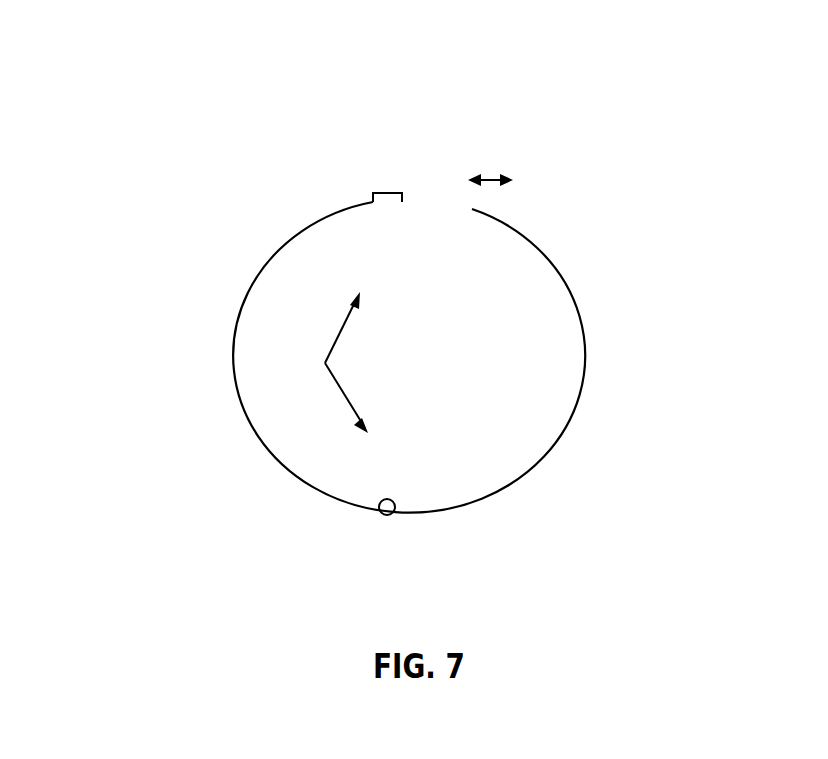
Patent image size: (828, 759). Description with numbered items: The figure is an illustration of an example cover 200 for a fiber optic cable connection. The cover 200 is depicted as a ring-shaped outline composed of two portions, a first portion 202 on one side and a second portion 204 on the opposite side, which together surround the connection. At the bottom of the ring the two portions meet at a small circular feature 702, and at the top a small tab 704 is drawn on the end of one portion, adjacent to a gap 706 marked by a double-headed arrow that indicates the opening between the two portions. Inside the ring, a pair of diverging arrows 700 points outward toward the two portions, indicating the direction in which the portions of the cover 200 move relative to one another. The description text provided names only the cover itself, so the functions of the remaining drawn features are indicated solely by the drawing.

The cover 200 is at (170, 105).
The ring-shaped housing / band 202 is at (231, 342).
The band portion 204 is at (582, 363).
The expansion direction arrows 700 is at (325, 363).
The hinge / pivot 702 is at (387, 515).
The latch tab 704 is at (390, 193).
The gap / opening 706 is at (490, 180).